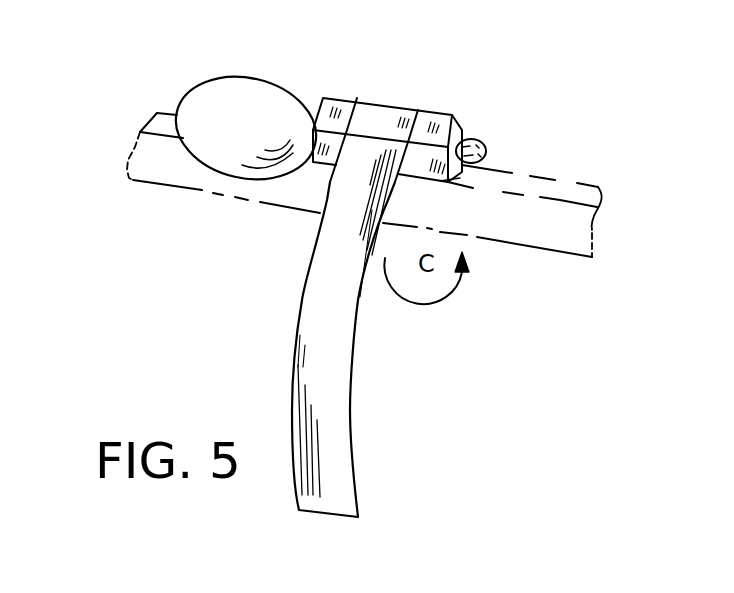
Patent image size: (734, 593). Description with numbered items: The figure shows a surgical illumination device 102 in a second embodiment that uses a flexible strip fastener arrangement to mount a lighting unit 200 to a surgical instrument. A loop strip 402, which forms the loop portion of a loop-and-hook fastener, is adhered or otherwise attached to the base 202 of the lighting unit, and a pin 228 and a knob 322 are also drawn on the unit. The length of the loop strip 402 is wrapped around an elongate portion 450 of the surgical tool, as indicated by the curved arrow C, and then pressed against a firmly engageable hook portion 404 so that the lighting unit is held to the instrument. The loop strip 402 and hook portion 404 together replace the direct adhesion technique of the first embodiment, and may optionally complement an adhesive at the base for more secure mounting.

The restraint assembly 102 is at (514, 80).
The slide 200 is at (457, 183).
The base 202 is at (455, 117).
The pin 228 is at (483, 143).
The knob 322 is at (227, 157).
The loop strip 402 is at (335, 398).
The hook portion 404 is at (378, 112).
The elongate portion 450 is at (592, 257).